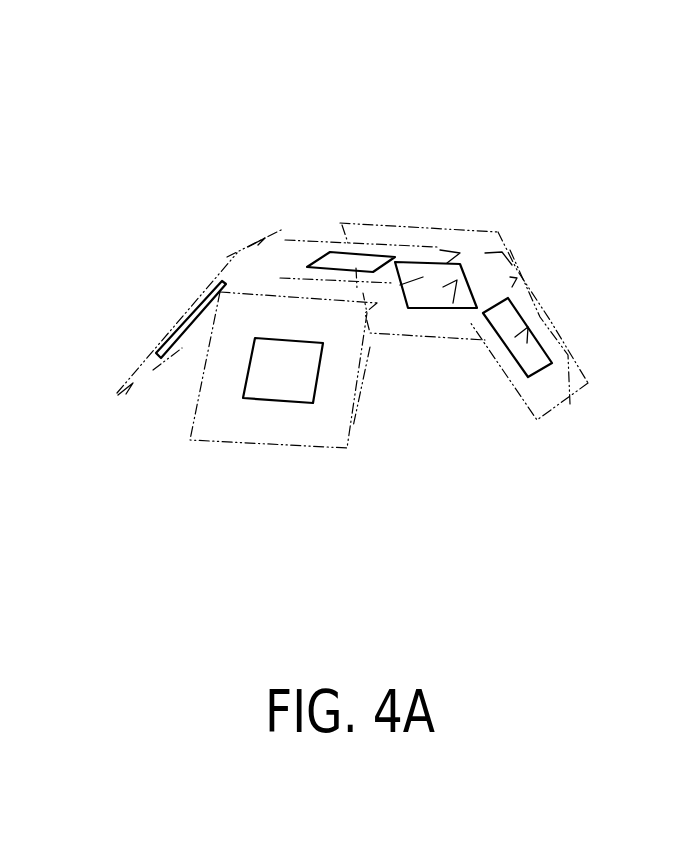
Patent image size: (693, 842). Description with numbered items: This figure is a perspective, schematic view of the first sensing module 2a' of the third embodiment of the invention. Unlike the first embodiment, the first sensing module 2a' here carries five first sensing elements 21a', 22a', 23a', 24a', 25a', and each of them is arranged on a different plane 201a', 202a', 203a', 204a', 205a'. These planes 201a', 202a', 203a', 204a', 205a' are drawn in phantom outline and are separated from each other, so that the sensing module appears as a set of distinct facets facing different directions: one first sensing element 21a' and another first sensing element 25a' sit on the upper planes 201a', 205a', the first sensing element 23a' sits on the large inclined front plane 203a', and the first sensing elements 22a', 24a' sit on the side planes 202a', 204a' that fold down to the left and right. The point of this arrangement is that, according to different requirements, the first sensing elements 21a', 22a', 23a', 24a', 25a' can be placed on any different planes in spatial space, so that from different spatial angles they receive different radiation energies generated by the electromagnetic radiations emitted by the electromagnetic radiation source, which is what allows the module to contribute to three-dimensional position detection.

The first sensing module 2a' is at (326, 219).
The plane 201a' is at (357, 215).
The first sensing element 21a' is at (363, 207).
The first sensing element 22a' is at (174, 287).
The plane 202a' is at (144, 429).
The first sensing element 23a' is at (256, 431).
The plane 203a' is at (280, 420).
The first sensing element 24a' is at (555, 308).
The plane 204a' is at (531, 391).
The first sensing element 25a' is at (453, 348).
The plane 205a' is at (425, 369).